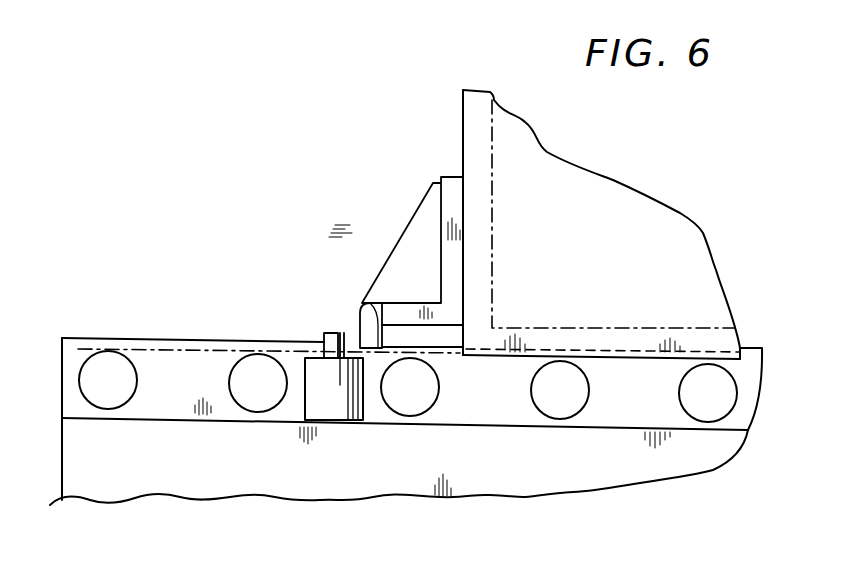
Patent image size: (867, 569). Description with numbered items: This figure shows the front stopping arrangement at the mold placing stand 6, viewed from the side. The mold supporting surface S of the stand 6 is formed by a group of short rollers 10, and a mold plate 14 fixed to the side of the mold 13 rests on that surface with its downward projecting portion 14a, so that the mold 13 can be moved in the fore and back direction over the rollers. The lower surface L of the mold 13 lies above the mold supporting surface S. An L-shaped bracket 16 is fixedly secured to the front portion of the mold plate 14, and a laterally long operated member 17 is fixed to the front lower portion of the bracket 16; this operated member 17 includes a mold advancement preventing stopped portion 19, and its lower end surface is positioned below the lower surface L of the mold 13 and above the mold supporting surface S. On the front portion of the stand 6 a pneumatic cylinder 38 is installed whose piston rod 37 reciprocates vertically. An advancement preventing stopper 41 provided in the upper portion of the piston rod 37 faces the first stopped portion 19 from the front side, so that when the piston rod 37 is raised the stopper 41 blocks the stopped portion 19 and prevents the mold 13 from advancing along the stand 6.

The stand 6 is at (533, 477).
The short rollers 10 is at (128, 392).
The mold supporting surface S is at (173, 348).
The pneumatic cylinder 38 is at (368, 403).
The advancement preventing stopper 41 is at (323, 336).
The piston rod 37 is at (321, 342).
The mold advancement preventing stopped portion 19 is at (326, 285).
The operated member 17 is at (370, 333).
The L-shaped bracket 16 is at (403, 223).
The mold plate 14 is at (462, 108).
The downward projecting portion 14a is at (512, 350).
The mold 13 is at (488, 164).
The lower surface of the mold L is at (610, 332).